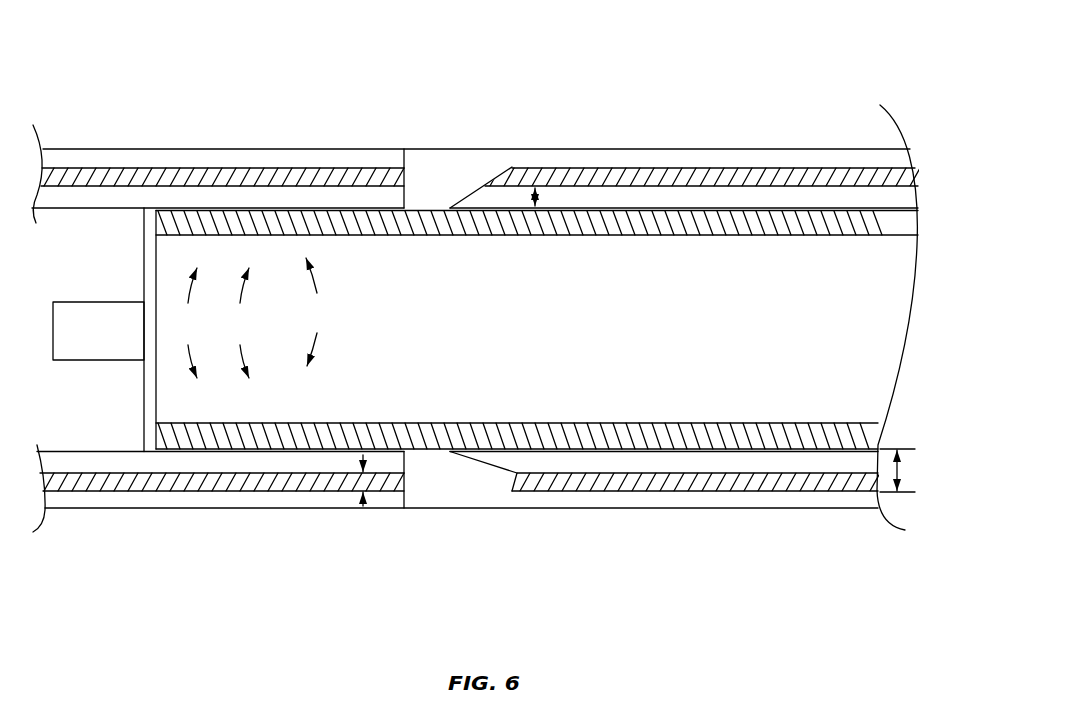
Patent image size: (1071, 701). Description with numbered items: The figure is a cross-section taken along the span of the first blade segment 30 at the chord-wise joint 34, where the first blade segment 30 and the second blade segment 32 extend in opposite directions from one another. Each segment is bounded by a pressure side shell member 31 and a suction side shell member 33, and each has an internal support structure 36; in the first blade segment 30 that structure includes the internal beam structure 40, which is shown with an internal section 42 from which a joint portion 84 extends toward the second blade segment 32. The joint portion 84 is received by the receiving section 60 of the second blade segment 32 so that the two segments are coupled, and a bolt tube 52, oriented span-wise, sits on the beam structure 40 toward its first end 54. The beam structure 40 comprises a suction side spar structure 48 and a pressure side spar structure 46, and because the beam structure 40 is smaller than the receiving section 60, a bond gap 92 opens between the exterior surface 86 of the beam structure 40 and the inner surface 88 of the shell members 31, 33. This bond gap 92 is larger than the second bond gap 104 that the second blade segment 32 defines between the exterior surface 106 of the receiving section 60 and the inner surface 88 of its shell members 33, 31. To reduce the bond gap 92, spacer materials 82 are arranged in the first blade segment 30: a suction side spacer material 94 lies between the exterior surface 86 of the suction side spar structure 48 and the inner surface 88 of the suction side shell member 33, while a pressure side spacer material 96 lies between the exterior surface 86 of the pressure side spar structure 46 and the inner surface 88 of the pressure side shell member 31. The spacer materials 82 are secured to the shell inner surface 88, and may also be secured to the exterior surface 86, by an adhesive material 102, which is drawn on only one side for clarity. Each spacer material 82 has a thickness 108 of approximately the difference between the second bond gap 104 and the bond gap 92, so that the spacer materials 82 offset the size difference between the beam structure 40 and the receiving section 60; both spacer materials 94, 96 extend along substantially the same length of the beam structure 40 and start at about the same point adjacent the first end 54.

The first blade segment 30 is at (676, 68).
The pressure side shell member 31 is at (277, 509).
The second blade segment 32 is at (209, 98).
The suction side shell member 33 is at (291, 148).
The chord-wise joint 34 is at (393, 130).
The internal support structure 36 is at (188, 323).
The internal beam structure 40 is at (240, 323).
The internal section 42 is at (545, 88).
The pressure side spar structure 46 is at (77, 466).
The suction side spar structure 48 is at (75, 203).
The bolt tube 52 is at (83, 361).
The first end 54 is at (126, 281).
The receiving section 60 is at (174, 580).
The spacer material 82 is at (718, 198).
The joint portion 84 is at (318, 312).
The exterior surface 86 is at (633, 210).
The inner surface 88 is at (162, 168).
The bond gap 92 is at (900, 467).
The suction side spacer material 94 is at (797, 198).
The pressure side spacer material 96 is at (541, 458).
The adhesive material 102 is at (107, 178).
The second bond gap 104 is at (366, 504).
The exterior surface of the receiving section 106 is at (110, 187).
The thickness 108 is at (540, 197).